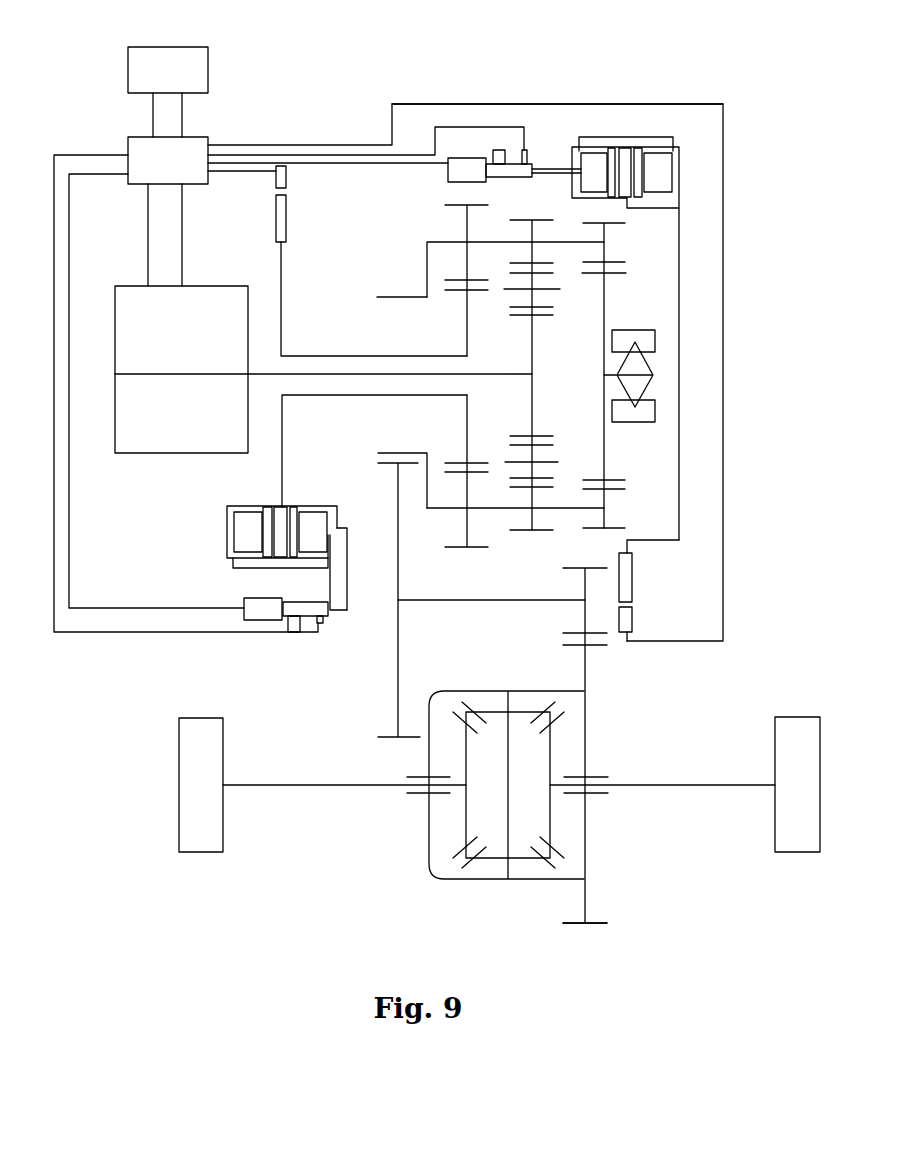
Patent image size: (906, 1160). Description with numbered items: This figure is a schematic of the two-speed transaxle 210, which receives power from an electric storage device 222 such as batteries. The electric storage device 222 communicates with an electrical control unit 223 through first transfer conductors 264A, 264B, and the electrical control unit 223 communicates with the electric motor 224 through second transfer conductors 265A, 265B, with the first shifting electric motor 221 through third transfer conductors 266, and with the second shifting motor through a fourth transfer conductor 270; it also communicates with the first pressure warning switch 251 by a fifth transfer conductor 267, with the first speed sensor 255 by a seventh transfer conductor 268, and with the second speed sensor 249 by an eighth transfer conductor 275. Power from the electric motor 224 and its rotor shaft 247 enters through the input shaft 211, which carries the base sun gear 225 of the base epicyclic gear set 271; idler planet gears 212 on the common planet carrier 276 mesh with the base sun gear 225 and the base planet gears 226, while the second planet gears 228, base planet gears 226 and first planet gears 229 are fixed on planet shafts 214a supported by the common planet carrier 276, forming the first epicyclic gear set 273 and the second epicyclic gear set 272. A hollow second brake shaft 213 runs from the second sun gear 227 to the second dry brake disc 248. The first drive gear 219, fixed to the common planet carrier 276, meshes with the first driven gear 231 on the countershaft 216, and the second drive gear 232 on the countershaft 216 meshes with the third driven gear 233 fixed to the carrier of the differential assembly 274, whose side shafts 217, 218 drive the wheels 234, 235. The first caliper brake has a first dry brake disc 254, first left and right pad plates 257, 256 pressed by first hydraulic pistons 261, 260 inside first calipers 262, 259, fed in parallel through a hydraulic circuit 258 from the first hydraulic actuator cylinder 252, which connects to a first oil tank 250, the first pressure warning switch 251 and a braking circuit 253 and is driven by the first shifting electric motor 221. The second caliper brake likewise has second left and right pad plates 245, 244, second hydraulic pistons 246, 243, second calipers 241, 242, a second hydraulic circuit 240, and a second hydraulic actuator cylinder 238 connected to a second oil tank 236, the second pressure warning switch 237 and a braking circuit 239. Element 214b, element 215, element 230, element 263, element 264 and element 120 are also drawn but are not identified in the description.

The two-speed transaxle 210 is at (305, 64).
The input shaft 211 is at (493, 374).
The idler planet gears 212 is at (518, 450).
The second brake shaft 213 is at (350, 356).
The planet shafts 214a is at (500, 516).
The gear 214b is at (515, 286).
The sensor 215 is at (655, 366).
The countershaft 216 is at (445, 600).
The side shaft 217 is at (313, 785).
The side shaft 218 is at (715, 785).
The first drive gear 219 is at (377, 297).
The first shifting electric motor 221 is at (467, 170).
The electric storage device 222 is at (168, 70).
The electrical control unit 223 is at (168, 160).
The electric motor 224 is at (181, 369).
The base sun gear 225 is at (532, 423).
The base planet gears 226 is at (545, 531).
The second sun gear 227 is at (467, 350).
The second planet gears 228 is at (467, 548).
The first planet gears 229 is at (625, 502).
The shaft 230 is at (604, 432).
The first driven gear 231 is at (400, 550).
The second drive gear 232 is at (585, 606).
The third driven gear 233 is at (585, 897).
The wheel 234 is at (201, 785).
The wheel 235 is at (797, 784).
The second oil tank 236 is at (294, 633).
The second pressure warning switch 237 is at (323, 621).
The second hydraulic actuator cylinder 238 is at (300, 602).
The braking circuit 239 is at (348, 582).
The second hydraulic circuit 240 is at (233, 567).
The second caliper 241 is at (227, 517).
The second caliper 242 is at (347, 523).
The second independent hydraulic piston 243 is at (320, 512).
The second right pad plate 244 is at (293, 507).
The second left pad plate 245 is at (270, 507).
The second independent hydraulic piston 246 is at (245, 512).
The rotor shaft 247 is at (183, 378).
The second dry brake disc 248 is at (286, 219).
The second speed sensor 249 is at (286, 184).
The first oil tank 250 is at (495, 152).
The first pressure warning switch 251 is at (527, 154).
The first hydraulic actuator cylinder 252 is at (515, 178).
The braking circuit 253 is at (560, 175).
The first dry brake disc 254 is at (633, 577).
The first speed sensor 255 is at (622, 614).
The first right pad plate 256 is at (637, 148).
The first left pad plate 257 is at (612, 148).
The hydraulic circuit 258 is at (670, 138).
The first caliper 259 is at (679, 200).
The first independent hydraulic piston 260 is at (650, 152).
The first independent hydraulic piston 261 is at (588, 152).
The first caliper 262 is at (585, 200).
The indicator 263 is at (653, 392).
The sensor block 264 is at (650, 423).
The first transfer conductor 264A is at (153, 122).
The first transfer conductor 264B is at (182, 122).
The second transfer conductor 265A is at (148, 252).
The second transfer conductor 265B is at (182, 252).
The third transfer conductors 266 is at (418, 165).
The fifth transfer conductor 267 is at (380, 157).
The seventh transfer conductor 268 is at (392, 135).
The fourth transfer conductor 270 is at (69, 522).
The base epicyclic gear set 271 is at (510, 346).
The second epicyclic gear set 272 is at (455, 441).
The first epicyclic gear set 273 is at (604, 332).
The differential assembly 274 is at (445, 691).
The eighth transfer conductor 275 is at (240, 172).
The common planet carrier 276 is at (427, 278).
The control unit 120 is at (263, 609).